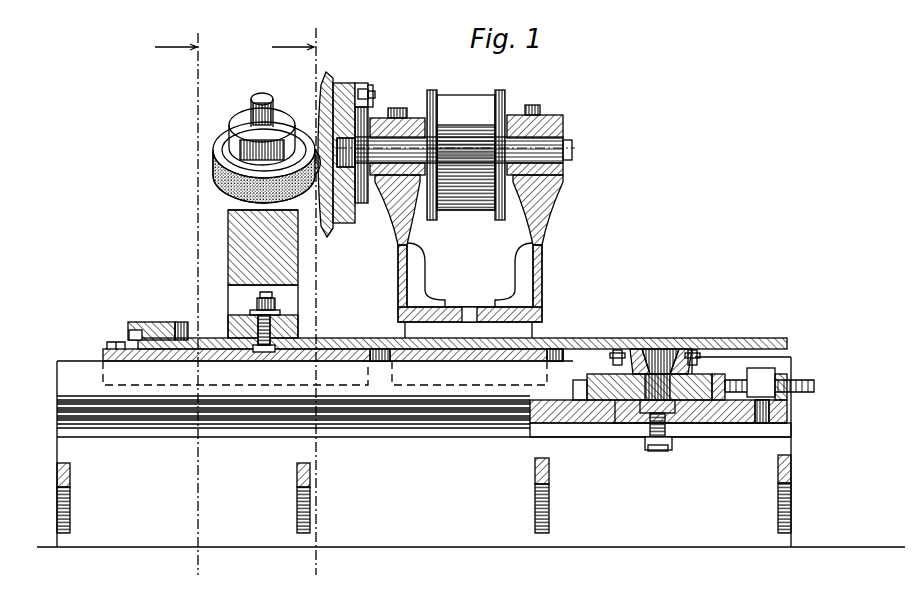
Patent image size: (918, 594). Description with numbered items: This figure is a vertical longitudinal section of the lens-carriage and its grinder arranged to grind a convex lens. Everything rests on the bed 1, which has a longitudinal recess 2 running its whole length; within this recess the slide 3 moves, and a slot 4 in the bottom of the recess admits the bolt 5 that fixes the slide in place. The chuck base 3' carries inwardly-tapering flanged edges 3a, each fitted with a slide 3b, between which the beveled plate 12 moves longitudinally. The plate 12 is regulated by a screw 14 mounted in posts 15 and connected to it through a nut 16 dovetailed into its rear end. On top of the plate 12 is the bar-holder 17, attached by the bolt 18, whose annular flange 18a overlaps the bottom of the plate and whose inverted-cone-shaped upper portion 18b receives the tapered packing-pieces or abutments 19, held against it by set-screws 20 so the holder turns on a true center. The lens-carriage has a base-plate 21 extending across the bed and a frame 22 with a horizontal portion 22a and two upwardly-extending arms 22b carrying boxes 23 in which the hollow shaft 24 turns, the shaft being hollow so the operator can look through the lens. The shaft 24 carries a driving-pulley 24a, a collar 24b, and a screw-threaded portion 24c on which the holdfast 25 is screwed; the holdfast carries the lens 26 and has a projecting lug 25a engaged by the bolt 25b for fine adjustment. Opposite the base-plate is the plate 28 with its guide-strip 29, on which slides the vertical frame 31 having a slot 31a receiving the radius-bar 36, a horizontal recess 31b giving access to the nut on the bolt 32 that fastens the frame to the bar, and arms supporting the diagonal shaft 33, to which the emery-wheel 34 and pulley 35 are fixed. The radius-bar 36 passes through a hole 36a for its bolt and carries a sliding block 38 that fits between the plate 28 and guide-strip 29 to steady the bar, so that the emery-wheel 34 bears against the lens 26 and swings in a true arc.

The bed 1 is at (471, 452).
The longitudinal recess 2 is at (75, 414).
The slide 3 is at (657, 426).
The base 3' is at (660, 439).
The inwardly-tapering flanged edges 3a is at (618, 425).
The slide 3b is at (570, 377).
The slot 4 is at (405, 428).
The bolt 5 is at (658, 450).
The plate 12 is at (605, 380).
The screw 14 is at (486, 301).
The posts 15 is at (541, 301).
The nut 16 is at (720, 376).
The bar-holder 17 is at (692, 358).
The bolt 18 is at (652, 432).
The annular flange 18a is at (678, 428).
The inverted-cone-shaped upper portion 18b is at (660, 348).
The packing-pieces or abutments 19 is at (640, 348).
The set-screws 20 is at (617, 350).
The base-plate 21 is at (485, 355).
The frame 22 is at (540, 310).
The horizontal portion 22a is at (455, 305).
The arms or supports 22b is at (395, 235).
The boxes 23 is at (418, 116).
The hollow shaft 24 is at (372, 84).
The driving-pulley 24a is at (466, 155).
The collar 24b is at (372, 88).
The screw-threaded portion 24c is at (330, 236).
The holdfast 25 is at (345, 82).
The projecting lug 25a is at (360, 84).
The bolt 25b is at (375, 95).
The lens 26 is at (325, 78).
The plate 28 is at (106, 344).
The guide-strip 29 is at (158, 322).
The vertical frame 31 is at (240, 248).
The slot 31a is at (242, 212).
The horizontal recess 31b is at (263, 320).
The bolt 32 is at (274, 300).
The shaft 33 is at (258, 95).
The emery-wheel 34 is at (213, 178).
The pulley 35 is at (218, 130).
The radius-bar 36 is at (372, 339).
The hole 36a is at (260, 352).
The block 38 is at (129, 336).